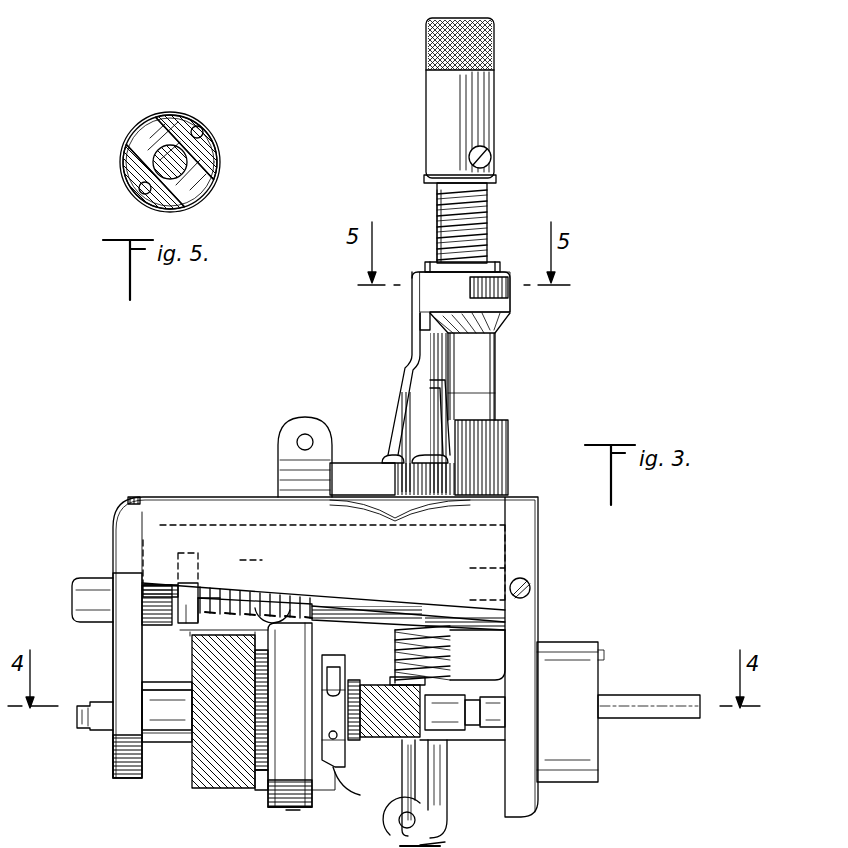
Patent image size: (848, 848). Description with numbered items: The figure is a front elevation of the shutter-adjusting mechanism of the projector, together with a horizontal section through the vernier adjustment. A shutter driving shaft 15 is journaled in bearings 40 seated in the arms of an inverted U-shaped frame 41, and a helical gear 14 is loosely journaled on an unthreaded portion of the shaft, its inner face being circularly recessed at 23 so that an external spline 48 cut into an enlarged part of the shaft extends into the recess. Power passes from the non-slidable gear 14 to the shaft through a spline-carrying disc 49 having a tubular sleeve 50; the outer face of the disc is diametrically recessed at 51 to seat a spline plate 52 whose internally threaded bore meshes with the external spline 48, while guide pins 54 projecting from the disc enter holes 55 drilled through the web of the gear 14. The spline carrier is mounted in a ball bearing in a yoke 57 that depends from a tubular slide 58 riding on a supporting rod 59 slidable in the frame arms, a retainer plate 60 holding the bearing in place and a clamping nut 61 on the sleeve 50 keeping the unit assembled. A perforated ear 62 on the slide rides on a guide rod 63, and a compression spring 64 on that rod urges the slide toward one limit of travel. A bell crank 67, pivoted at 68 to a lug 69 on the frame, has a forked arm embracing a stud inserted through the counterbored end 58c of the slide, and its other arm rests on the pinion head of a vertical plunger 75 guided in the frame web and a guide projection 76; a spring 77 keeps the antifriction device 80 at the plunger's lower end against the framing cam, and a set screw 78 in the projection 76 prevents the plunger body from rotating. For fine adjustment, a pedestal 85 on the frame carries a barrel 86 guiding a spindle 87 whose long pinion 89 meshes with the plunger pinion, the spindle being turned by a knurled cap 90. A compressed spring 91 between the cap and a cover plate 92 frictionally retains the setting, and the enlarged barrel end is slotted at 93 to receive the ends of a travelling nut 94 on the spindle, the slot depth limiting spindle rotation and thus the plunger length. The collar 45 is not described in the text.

In FIG. 3, the helical gear 14 is at (216, 789).
In FIG. 3, the shutter driving shaft 15 is at (77, 720).
In FIG. 3, the circular recess 23 is at (240, 838).
In FIG. 3, the bearings 40 is at (115, 668).
In FIG. 3, the inverted U-shaped frame 41 is at (160, 496).
In FIG. 3, the collar 45 is at (163, 745).
In FIG. 3, the external spline 48 is at (376, 740).
In FIG. 3, the spline-carrying disc 49 is at (268, 690).
In FIG. 3, the tubular sleeve 50 is at (345, 682).
In FIG. 3, the diametric recess 51 is at (268, 662).
In FIG. 3, the spline plate 52 is at (264, 792).
In FIG. 3, the guide pins 54 is at (166, 700).
In FIG. 3, the holes 55 is at (204, 838).
In FIG. 3, the yoke 57 is at (300, 809).
In FIG. 3, the tubular slide 58 is at (245, 612).
In FIG. 3, the counterbored inner end 58c is at (300, 600).
In FIG. 3, the supporting rod 59 is at (372, 616).
In FIG. 3, the retainer plate 60 is at (323, 791).
In FIG. 3, the clamping nut 61 is at (340, 762).
In FIG. 3, the perforated ear 62 is at (190, 598).
In FIG. 3, the guide rod 63 is at (152, 584).
In FIG. 3, the compression spring 64 is at (225, 598).
In FIG. 3, the bell crank 67 is at (351, 432).
In FIG. 3, the pivot 68 is at (305, 434).
In FIG. 3, the lug 69 is at (283, 450).
In FIG. 3, the vertical plunger 75 is at (398, 670).
In FIG. 3, the guide projection 76 is at (486, 742).
In FIG. 3, the spring 77 is at (452, 662).
In FIG. 3, the set screw 78 is at (440, 846).
In FIG. 3, the antifriction device 80 is at (399, 828).
In FIG. 3, the pedestal 85 is at (402, 378).
In FIG. 5, the barrel 86 is at (214, 140).
In FIG. 3, the barrel 86 is at (496, 352).
In FIG. 5, the spindle 87 is at (180, 160).
In FIG. 3, the spindle 87 is at (488, 224).
In FIG. 3, the long pinion 89 is at (509, 457).
In FIG. 3, the knurled cap 90 is at (488, 108).
In FIG. 3, the compressed spring 91 is at (437, 202).
In FIG. 3, the cover plate 92 is at (505, 263).
In FIG. 5, the diametric slots 93 is at (218, 185).
In FIG. 3, the diametric slots 93 is at (512, 305).
In FIG. 5, the travelling nut 94 is at (148, 132).
In FIG. 3, the travelling nut 94 is at (510, 289).